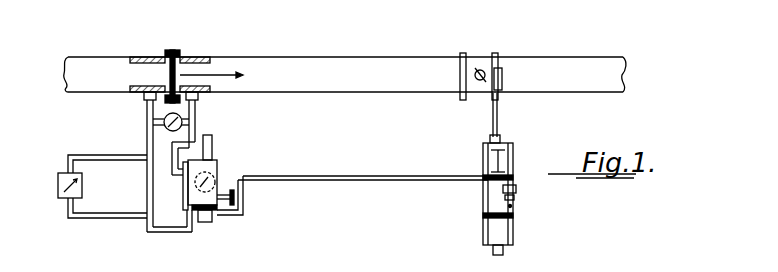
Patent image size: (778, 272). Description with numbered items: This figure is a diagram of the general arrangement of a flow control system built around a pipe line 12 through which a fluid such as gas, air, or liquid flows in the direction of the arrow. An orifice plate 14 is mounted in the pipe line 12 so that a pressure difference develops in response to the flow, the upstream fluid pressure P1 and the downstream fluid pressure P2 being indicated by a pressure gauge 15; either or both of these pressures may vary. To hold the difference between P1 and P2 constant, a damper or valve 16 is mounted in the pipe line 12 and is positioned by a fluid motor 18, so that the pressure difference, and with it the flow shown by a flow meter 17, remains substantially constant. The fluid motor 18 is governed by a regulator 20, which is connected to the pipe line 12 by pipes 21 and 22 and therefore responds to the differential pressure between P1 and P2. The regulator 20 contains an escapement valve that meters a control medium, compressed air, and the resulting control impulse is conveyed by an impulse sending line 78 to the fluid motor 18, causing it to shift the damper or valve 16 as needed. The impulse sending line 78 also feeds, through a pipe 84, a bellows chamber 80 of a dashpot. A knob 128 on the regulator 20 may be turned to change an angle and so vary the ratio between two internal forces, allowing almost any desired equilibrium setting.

The pipe line 12 is at (106, 94).
The orifice plate 14 is at (168, 79).
The upstream fluid pressure P1 is at (155, 68).
The downstream fluid pressure P2 is at (194, 67).
The pressure gauge 15 is at (166, 128).
The damper or valve 16 is at (482, 80).
The flow meter 17 is at (58, 190).
The fluid motor 18 is at (493, 198).
The regulator 20 is at (217, 170).
The pipe 21 is at (147, 186).
The pipe 22 is at (196, 112).
The impulse sending line 78 is at (302, 177).
The bellows chamber 80 is at (205, 222).
The pipe 84 is at (246, 198).
The knob 128 is at (234, 204).